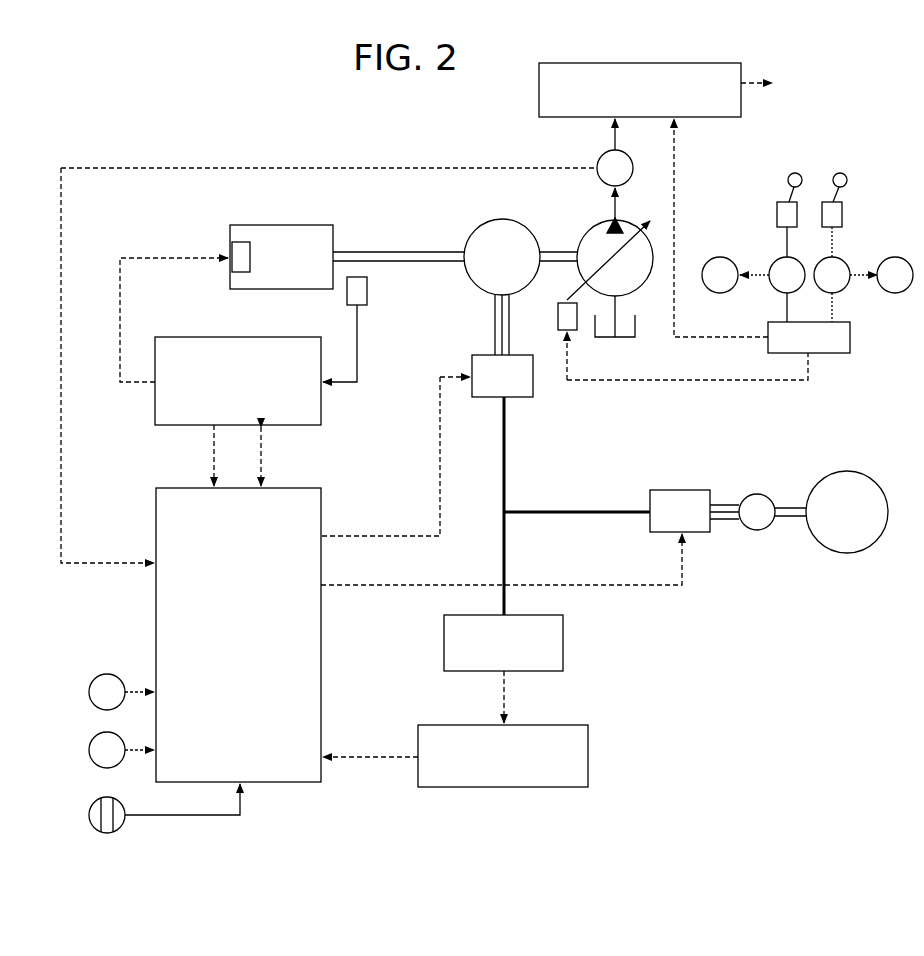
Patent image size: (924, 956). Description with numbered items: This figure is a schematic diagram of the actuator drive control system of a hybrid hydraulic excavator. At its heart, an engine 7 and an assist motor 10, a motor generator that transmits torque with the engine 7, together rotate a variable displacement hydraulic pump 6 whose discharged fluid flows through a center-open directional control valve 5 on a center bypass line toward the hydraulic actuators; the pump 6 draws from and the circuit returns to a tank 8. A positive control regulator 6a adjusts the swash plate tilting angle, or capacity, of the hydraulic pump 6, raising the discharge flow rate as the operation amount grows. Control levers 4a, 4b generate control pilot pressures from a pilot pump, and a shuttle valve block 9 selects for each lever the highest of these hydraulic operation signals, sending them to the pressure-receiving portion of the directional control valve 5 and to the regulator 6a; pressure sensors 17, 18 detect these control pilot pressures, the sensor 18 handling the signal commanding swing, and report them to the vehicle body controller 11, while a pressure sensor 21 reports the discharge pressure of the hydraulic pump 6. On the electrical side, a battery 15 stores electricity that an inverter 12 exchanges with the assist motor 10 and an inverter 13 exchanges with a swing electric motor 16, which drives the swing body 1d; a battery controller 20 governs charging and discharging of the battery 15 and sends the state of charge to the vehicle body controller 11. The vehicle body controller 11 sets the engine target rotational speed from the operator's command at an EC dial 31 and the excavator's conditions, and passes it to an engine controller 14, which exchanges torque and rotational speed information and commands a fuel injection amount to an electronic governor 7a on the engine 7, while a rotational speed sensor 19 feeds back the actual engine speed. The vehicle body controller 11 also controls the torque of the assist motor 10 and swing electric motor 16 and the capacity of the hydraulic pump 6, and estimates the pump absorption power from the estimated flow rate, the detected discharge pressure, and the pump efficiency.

The directional control valve 5 is at (539, 93).
The pressure sensor 21 is at (598, 162).
The variable displacement hydraulic pump 6 is at (590, 233).
The tank 8 is at (627, 338).
The regulator 6a is at (562, 323).
The shuttle valve block 9 is at (852, 340).
The pressure sensor 17 is at (774, 260).
The pressure sensor 18 is at (843, 260).
The control lever 4a is at (777, 212).
The control lever 4b is at (842, 212).
The engine 7 is at (297, 225).
The electronic governor 7a is at (241, 242).
The assist motor 10 is at (472, 228).
The rotational speed sensor 19 is at (369, 292).
The engine controller 14 is at (199, 337).
The inverter 12 is at (523, 398).
The inverter 13 is at (684, 490).
The swing electric motor 16 is at (758, 494).
The swing body 1d is at (847, 471).
The vehicle body controller 11 is at (322, 650).
The EC dial 31 is at (89, 815).
The battery 15 is at (565, 640).
The battery controller 20 is at (590, 760).